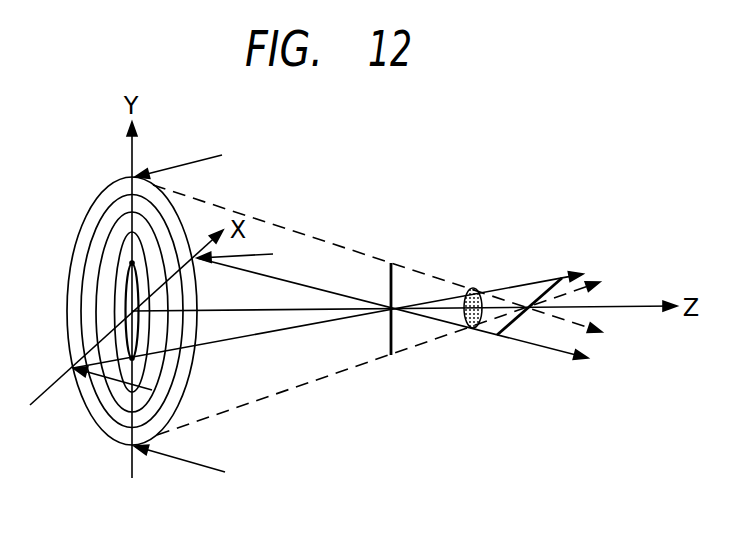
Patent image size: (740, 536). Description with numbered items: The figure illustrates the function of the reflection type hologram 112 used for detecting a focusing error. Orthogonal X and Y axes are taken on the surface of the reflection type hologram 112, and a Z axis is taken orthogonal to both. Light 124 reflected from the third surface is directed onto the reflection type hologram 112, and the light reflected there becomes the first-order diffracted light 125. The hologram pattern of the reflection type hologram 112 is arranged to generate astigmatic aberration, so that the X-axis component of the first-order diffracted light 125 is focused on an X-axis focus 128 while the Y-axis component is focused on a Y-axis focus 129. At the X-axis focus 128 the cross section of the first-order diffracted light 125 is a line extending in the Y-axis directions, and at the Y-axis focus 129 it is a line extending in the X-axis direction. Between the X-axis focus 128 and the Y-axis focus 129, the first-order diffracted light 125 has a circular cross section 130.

The reflection type hologram 112 is at (105, 198).
The light directed to the reflection hologram 124 is at (198, 158).
The first-order diffracted light 125 is at (345, 295).
The X-axis focus 128 is at (393, 295).
The Y-axis focus 129 is at (525, 300).
The circular cross section 130 is at (475, 290).